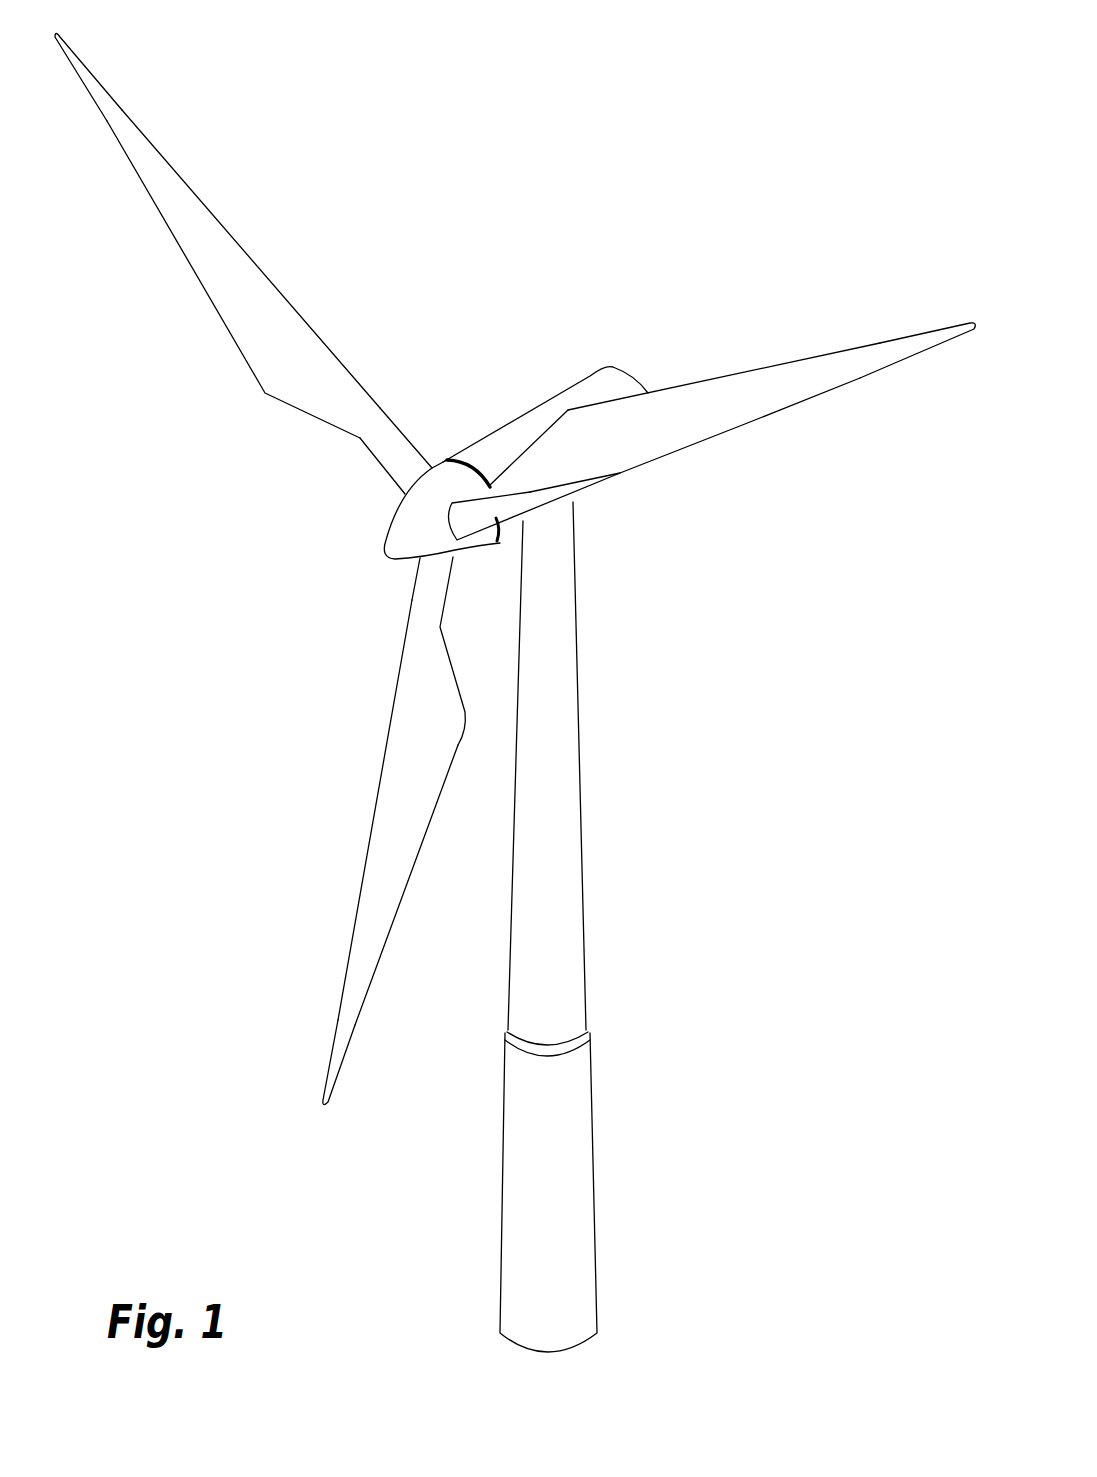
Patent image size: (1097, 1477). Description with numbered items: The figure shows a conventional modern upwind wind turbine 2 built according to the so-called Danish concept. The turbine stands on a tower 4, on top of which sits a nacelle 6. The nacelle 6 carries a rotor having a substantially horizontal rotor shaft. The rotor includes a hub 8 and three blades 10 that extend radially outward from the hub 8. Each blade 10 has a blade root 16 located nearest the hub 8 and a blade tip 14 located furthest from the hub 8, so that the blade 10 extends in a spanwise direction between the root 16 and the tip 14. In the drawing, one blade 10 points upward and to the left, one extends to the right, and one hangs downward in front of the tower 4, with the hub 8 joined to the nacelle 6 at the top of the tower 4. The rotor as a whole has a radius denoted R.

The wind turbine 2 is at (699, 855).
The tower 4 is at (568, 770).
The nacelle 6 is at (513, 437).
The hub 8 is at (403, 530).
The blade 10 is at (283, 365).
The blade tip 14 is at (104, 97).
The blade root 16 is at (412, 481).